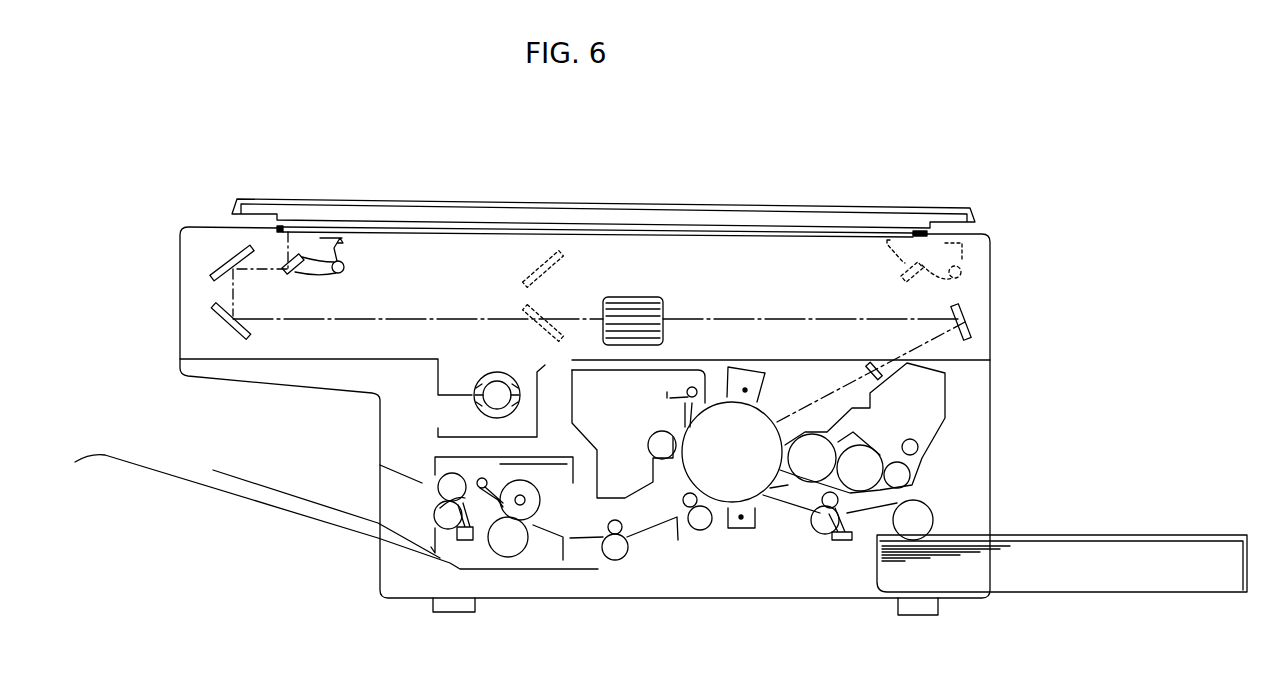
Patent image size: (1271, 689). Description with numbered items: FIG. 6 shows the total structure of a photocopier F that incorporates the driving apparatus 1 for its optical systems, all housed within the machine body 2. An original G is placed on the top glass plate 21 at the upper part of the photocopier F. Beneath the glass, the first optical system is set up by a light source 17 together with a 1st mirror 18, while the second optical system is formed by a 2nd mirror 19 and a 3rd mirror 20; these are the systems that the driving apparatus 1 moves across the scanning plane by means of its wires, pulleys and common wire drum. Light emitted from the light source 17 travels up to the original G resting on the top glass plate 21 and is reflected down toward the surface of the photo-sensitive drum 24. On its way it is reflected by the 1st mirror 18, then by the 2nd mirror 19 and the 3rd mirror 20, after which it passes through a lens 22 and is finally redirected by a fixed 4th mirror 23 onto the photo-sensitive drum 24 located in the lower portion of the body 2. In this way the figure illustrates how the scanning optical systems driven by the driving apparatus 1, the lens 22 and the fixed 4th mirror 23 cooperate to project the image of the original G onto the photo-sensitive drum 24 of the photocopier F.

The driving apparatus 1 is at (340, 238).
The apparatus housing 2 is at (998, 260).
The light source 17 is at (347, 266).
The 1st mirror 18 is at (292, 278).
The 2nd mirror 19 is at (225, 265).
The 3rd mirror 20 is at (224, 316).
The top glass plate 21 is at (627, 233).
The lens 22 is at (658, 310).
The fixed 4th mirror 23 is at (963, 320).
The photo-sensitive drum 24 is at (727, 490).
The original G is at (567, 226).
The photocopier F is at (870, 190).